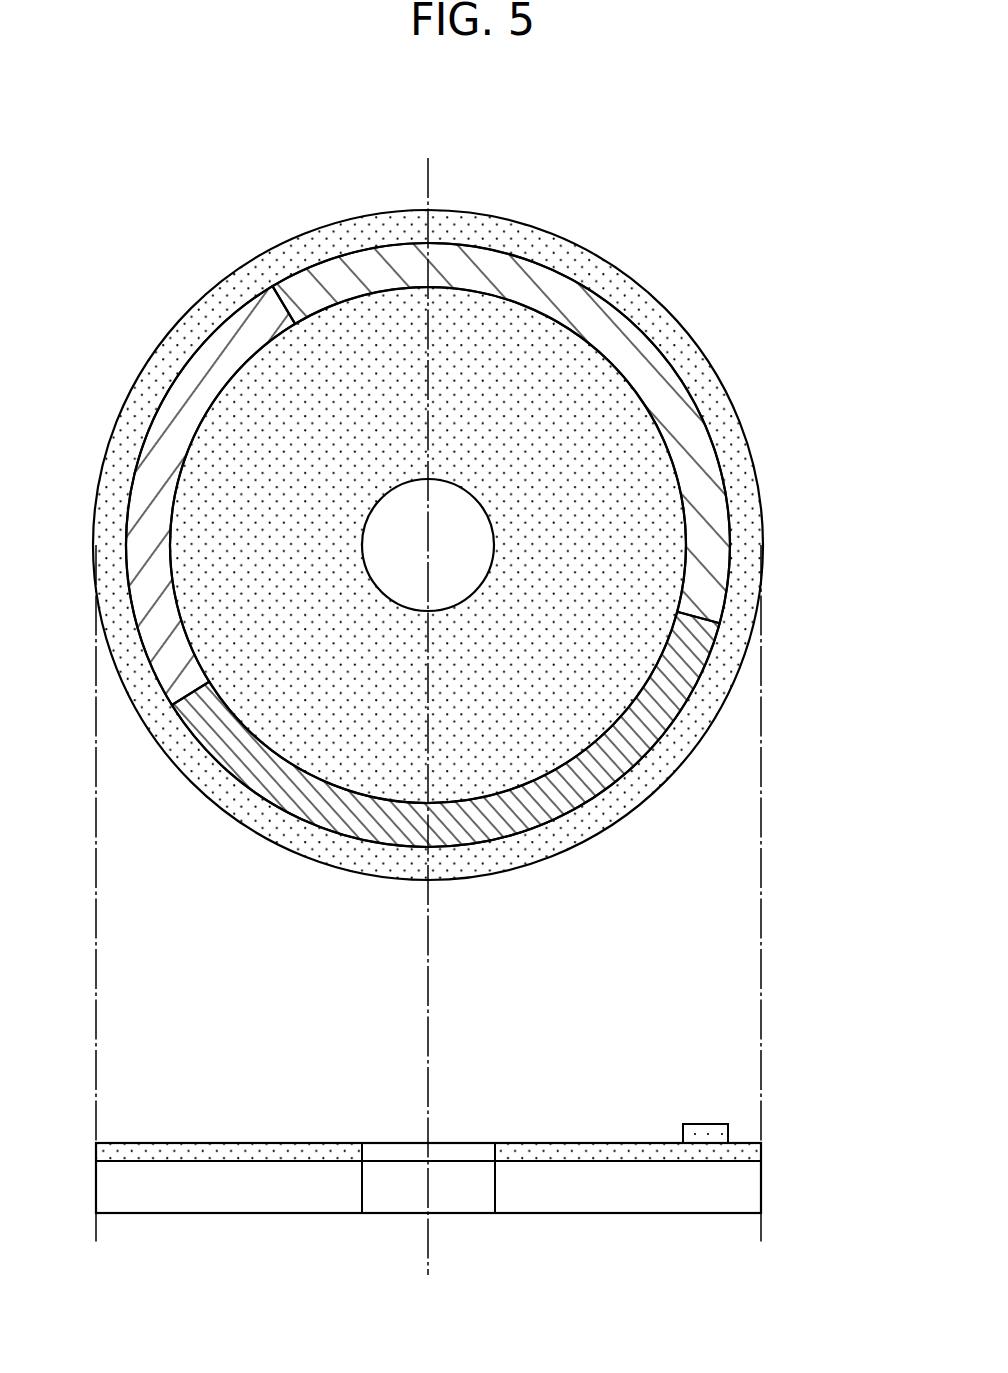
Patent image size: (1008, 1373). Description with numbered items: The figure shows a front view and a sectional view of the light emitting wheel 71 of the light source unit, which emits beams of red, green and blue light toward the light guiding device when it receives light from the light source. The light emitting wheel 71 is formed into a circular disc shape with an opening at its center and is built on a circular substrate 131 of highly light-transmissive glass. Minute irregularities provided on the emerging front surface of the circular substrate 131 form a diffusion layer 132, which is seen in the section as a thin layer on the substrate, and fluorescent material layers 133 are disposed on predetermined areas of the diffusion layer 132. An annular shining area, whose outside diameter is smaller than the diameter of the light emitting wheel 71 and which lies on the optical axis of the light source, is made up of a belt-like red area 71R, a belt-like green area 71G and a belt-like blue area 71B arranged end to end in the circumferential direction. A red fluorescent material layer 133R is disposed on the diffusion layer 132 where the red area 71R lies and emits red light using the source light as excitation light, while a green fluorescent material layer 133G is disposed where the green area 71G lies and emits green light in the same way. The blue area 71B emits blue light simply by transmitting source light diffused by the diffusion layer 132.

The light emitting wheel 71 is at (737, 363).
The blue area 71B is at (182, 407).
The green area 71G is at (367, 272).
The red area 71R is at (573, 780).
The circular substrate 131 is at (646, 1192).
The diffusion layer 132 is at (542, 373).
The fluorescent material layers 133 is at (381, 623).
The green fluorescent material layer 133G is at (502, 363).
The red fluorescent material layer 133R is at (446, 790).